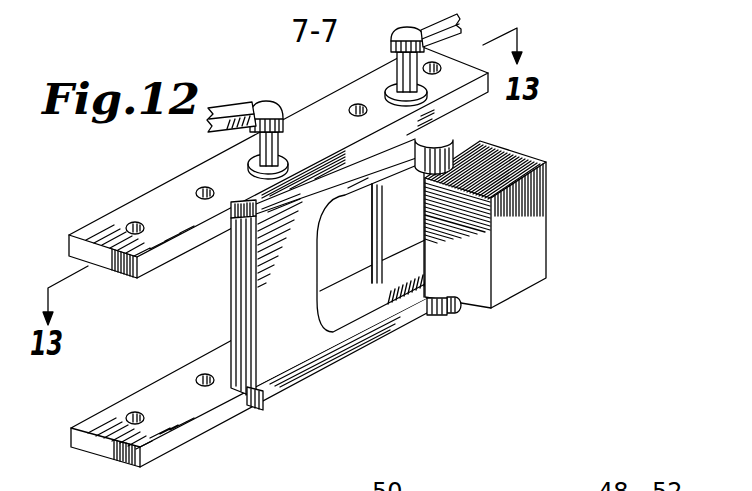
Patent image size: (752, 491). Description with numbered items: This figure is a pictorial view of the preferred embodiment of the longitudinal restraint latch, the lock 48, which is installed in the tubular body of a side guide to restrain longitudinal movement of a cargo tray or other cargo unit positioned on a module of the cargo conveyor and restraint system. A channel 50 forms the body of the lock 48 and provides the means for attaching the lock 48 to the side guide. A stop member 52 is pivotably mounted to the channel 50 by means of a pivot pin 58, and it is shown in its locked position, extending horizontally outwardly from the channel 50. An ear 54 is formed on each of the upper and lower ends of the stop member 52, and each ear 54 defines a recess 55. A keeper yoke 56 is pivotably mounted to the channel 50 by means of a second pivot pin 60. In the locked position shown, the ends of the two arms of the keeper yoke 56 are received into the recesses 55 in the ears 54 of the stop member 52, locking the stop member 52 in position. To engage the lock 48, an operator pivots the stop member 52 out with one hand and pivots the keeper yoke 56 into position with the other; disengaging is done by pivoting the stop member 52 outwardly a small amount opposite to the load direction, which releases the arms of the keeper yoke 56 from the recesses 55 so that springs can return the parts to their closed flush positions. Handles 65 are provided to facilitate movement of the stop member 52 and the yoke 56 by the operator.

The lock 48 is at (553, 139).
The channel 50 is at (319, 101).
The stop member 52 is at (546, 212).
The ear 54 is at (453, 130).
The recess 55 is at (406, 163).
The keeper yoke 56 is at (413, 311).
The pivot pin 58 is at (424, 90).
The pivot pin 60 is at (250, 165).
The handle 65 is at (225, 110).